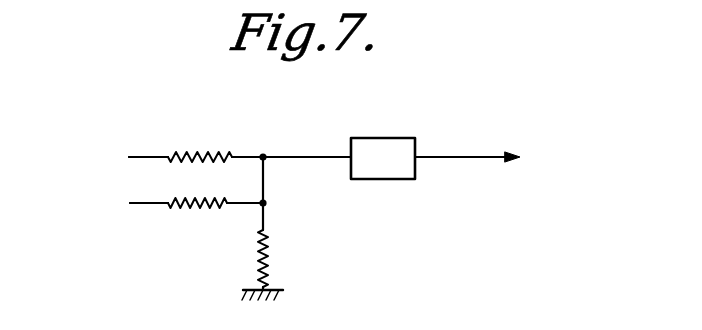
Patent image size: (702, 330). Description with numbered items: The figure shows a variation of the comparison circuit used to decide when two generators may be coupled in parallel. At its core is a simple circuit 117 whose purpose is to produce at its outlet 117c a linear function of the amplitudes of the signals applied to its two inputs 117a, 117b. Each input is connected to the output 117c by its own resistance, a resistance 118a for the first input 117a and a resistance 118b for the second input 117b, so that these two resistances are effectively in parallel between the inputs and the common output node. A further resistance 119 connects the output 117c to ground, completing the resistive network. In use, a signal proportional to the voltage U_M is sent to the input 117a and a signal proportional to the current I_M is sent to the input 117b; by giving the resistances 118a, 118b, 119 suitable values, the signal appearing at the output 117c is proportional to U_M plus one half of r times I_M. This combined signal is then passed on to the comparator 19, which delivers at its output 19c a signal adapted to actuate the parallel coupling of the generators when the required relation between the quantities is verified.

The comparator 19 is at (378, 146).
The output of the comparator 19c is at (476, 160).
The simple circuit 117 is at (246, 146).
The input 117a is at (140, 205).
The input 117b is at (143, 153).
The output 117c is at (311, 160).
The resistance 118a is at (193, 207).
The resistance 118b is at (200, 152).
The resistance 119 is at (270, 252).